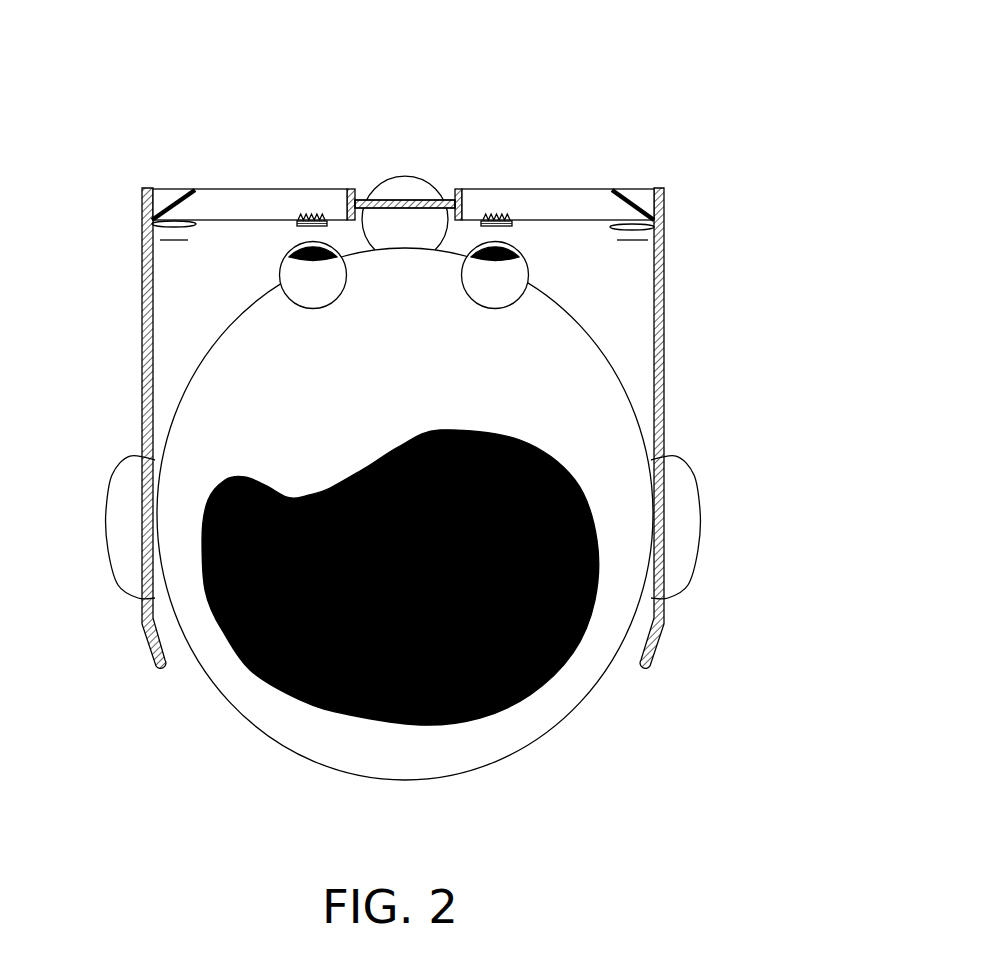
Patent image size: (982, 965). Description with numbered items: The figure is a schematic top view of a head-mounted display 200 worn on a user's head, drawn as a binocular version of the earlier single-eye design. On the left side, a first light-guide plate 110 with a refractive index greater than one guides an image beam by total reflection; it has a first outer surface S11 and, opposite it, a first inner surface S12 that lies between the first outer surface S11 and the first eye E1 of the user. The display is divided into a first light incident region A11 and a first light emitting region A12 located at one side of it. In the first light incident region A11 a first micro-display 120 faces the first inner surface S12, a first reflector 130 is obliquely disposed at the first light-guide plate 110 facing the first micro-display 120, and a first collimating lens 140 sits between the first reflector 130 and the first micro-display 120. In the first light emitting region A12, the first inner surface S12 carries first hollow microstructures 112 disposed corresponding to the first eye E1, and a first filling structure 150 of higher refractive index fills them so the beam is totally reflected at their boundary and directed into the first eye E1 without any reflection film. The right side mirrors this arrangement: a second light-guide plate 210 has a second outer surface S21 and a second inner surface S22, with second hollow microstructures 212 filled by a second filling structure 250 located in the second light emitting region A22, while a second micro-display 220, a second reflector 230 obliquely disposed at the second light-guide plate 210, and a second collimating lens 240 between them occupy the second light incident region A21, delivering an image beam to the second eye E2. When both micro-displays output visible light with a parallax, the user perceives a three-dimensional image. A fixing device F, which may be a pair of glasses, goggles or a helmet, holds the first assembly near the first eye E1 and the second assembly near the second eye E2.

The head-mounted display 200 is at (741, 71).
The first light-guide plate 110 is at (238, 203).
The first hollow microstructures 112 is at (313, 212).
The first micro-display 120 is at (178, 240).
The first reflector 130 is at (173, 197).
The first collimating lens 140 is at (160, 229).
The first filling structure 150 is at (299, 227).
The second light-guide plate 210 is at (570, 205).
The second hollow microstructures 212 is at (497, 216).
The second micro-display 220 is at (628, 243).
The second reflector 230 is at (635, 198).
The second collimating lens 240 is at (647, 230).
The second filling structure 250 is at (505, 227).
The first outer surface S11 is at (326, 186).
The first inner surface S12 is at (340, 224).
The second outer surface S21 is at (484, 186).
The second inner surface S22 is at (468, 224).
The first eye E1 is at (310, 308).
The second eye E2 is at (497, 308).
The fixing device F is at (662, 428).
The first light incident region A11 is at (195, 117).
The first light emitting region A12 is at (353, 117).
The second light incident region A21 is at (665, 118).
The second light emitting region A22 is at (510, 117).